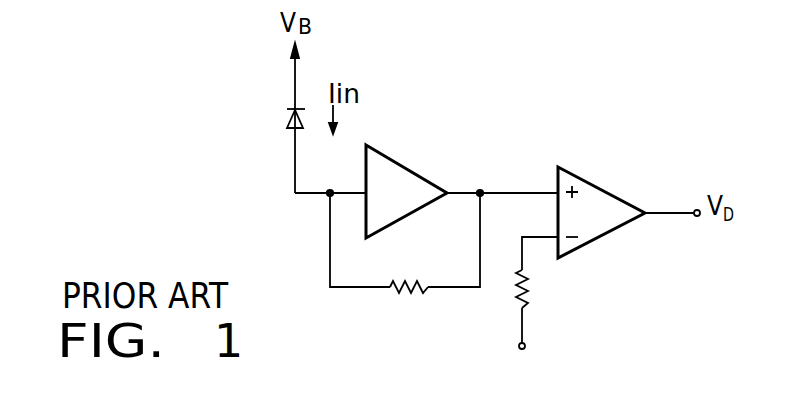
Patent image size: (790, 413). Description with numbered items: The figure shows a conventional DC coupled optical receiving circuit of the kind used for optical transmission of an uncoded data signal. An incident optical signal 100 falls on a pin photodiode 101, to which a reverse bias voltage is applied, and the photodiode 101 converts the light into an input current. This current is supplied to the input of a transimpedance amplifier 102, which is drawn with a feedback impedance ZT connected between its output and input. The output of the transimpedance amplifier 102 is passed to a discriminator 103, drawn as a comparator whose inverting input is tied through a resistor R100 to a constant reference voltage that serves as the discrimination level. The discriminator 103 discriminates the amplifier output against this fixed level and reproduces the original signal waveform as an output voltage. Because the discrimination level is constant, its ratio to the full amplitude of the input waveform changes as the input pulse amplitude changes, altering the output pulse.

The incident optical signal 100 is at (276, 113).
The pin photodiode 101 is at (293, 132).
The transimpedance amplifier 102 is at (426, 174).
The discriminator 103 is at (607, 187).
The resistor R100 is at (532, 293).
The feedback impedance ZT is at (403, 296).